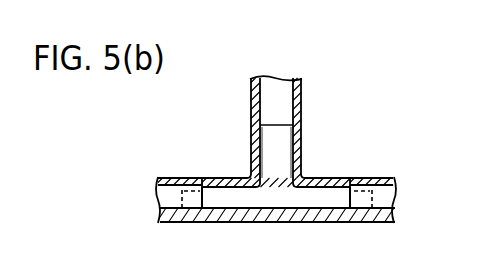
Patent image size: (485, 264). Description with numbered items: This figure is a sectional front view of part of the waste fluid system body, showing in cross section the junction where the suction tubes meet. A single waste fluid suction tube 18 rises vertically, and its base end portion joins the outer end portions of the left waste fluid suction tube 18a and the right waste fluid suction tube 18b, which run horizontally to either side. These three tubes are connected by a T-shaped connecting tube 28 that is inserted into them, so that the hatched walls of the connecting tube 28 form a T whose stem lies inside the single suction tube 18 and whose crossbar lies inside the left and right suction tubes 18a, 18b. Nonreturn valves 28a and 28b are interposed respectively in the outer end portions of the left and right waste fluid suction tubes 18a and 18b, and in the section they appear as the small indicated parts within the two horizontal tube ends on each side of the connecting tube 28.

The single waste fluid suction tube 18 is at (300, 86).
The left waste fluid suction tube 18a is at (201, 178).
The right waste fluid suction tube 18b is at (372, 178).
The T-shaped connecting tube 28 is at (277, 212).
The nonreturn valve 28a is at (193, 210).
The nonreturn valve 28b is at (361, 215).